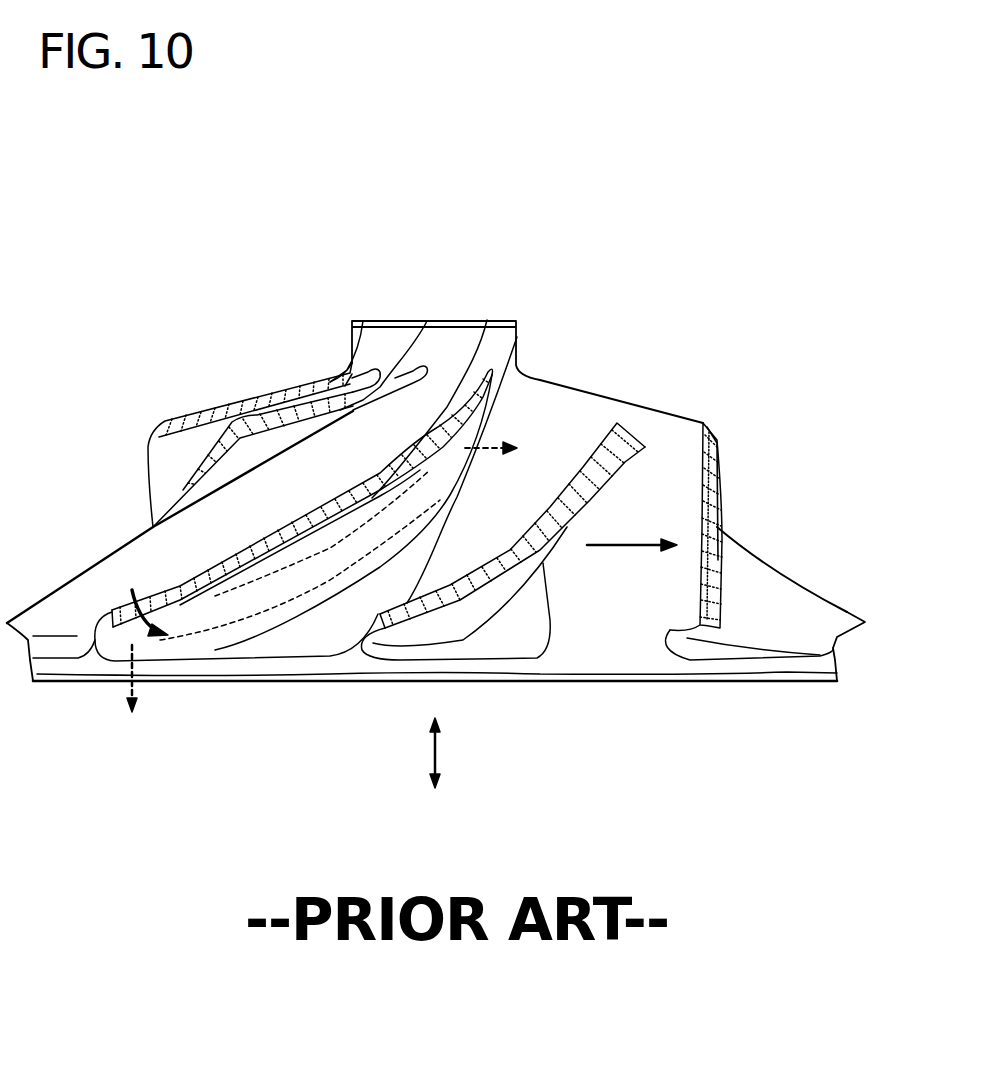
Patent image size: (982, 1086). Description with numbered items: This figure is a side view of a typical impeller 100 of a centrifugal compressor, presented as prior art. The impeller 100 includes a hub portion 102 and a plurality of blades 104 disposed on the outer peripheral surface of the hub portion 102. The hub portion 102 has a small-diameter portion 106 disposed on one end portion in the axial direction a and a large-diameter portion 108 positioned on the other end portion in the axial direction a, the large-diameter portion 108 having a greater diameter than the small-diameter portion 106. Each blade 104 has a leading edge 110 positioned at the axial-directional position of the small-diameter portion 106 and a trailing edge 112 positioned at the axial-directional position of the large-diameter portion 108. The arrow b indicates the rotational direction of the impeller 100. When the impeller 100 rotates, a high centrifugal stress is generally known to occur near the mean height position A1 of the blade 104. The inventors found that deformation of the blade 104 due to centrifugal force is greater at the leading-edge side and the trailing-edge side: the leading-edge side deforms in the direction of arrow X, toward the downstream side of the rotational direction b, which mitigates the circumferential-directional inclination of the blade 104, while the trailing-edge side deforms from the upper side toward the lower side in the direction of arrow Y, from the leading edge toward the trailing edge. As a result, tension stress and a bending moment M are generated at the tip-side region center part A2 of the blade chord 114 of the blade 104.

The impeller 100 is at (323, 234).
The hub portion 102 is at (603, 672).
The blade 104 is at (668, 410).
The small-diameter portion 106 is at (447, 402).
The large-diameter portion 108 is at (787, 672).
The leading edge 110 is at (517, 340).
The trailing edge 112 is at (187, 650).
The blade chord 114 is at (123, 553).
The mean height position A1 is at (220, 630).
The tip-side region center part A2 is at (258, 578).
The bending moment M is at (130, 603).
The arrow X is at (487, 445).
The arrow Y is at (127, 670).
The axial direction a is at (438, 740).
The rotational direction b is at (620, 543).